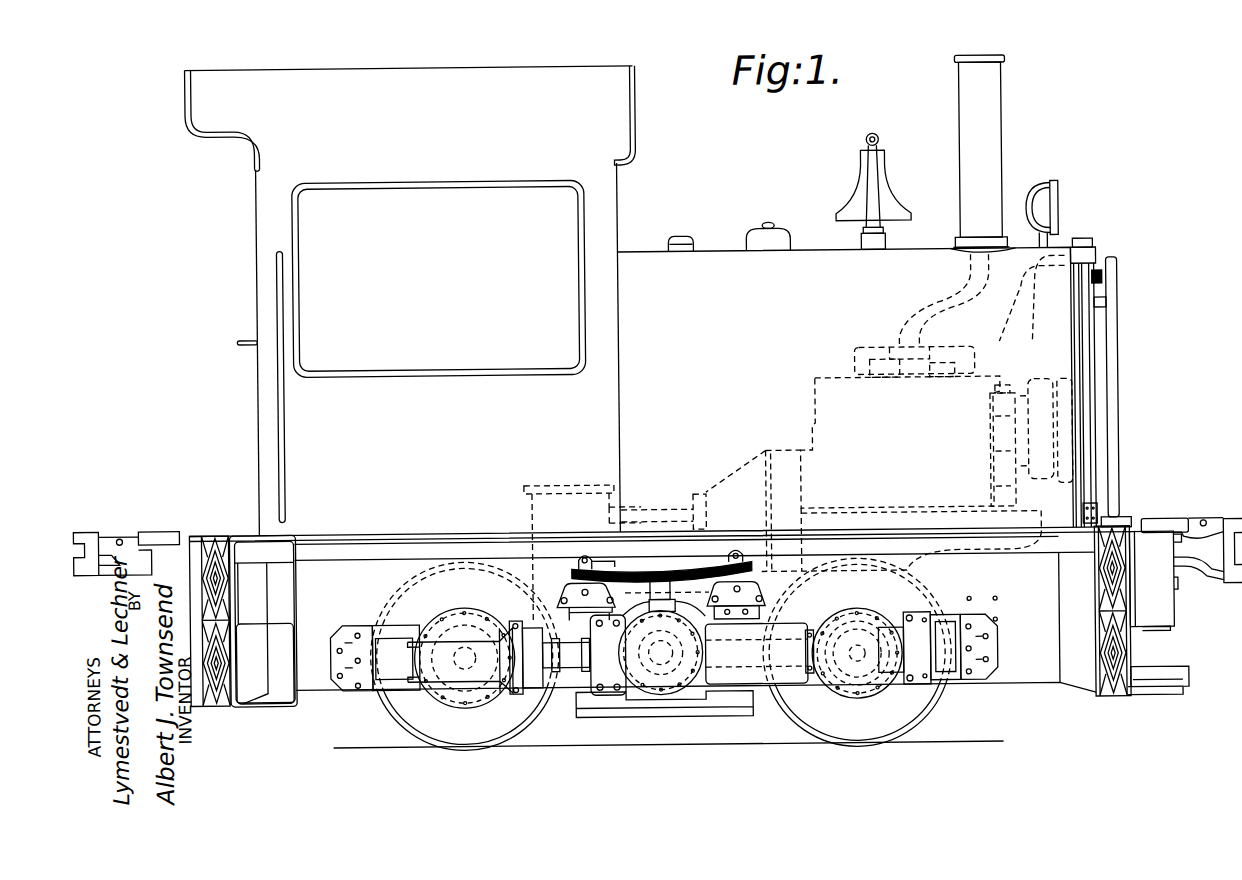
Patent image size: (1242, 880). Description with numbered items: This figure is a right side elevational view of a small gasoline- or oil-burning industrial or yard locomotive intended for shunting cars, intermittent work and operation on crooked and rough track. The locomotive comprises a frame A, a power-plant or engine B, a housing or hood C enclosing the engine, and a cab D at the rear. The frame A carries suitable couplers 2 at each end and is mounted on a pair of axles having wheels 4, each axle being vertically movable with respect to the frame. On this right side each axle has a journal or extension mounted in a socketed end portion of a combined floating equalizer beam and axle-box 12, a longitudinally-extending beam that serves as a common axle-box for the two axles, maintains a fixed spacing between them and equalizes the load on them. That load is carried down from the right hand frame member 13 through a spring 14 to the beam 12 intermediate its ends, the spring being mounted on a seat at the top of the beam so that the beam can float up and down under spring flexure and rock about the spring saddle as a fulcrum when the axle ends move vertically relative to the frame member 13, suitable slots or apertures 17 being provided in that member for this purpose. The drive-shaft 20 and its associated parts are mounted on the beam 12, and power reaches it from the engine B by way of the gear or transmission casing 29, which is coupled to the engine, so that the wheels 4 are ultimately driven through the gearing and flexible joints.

The coupler 2 is at (107, 545).
The wheel 4 is at (392, 720).
The combined floating equalizer beam and axle-box 12 is at (756, 646).
The right hand frame member 13 is at (460, 637).
The spring 14 is at (623, 573).
The slot or aperture 17 is at (448, 697).
The drive-shaft 20 is at (759, 653).
The gear or transmission casing 29 is at (537, 572).
The frame A is at (689, 616).
The power-plant or engine B is at (812, 430).
The housing or hood C is at (873, 293).
The cab D is at (414, 347).